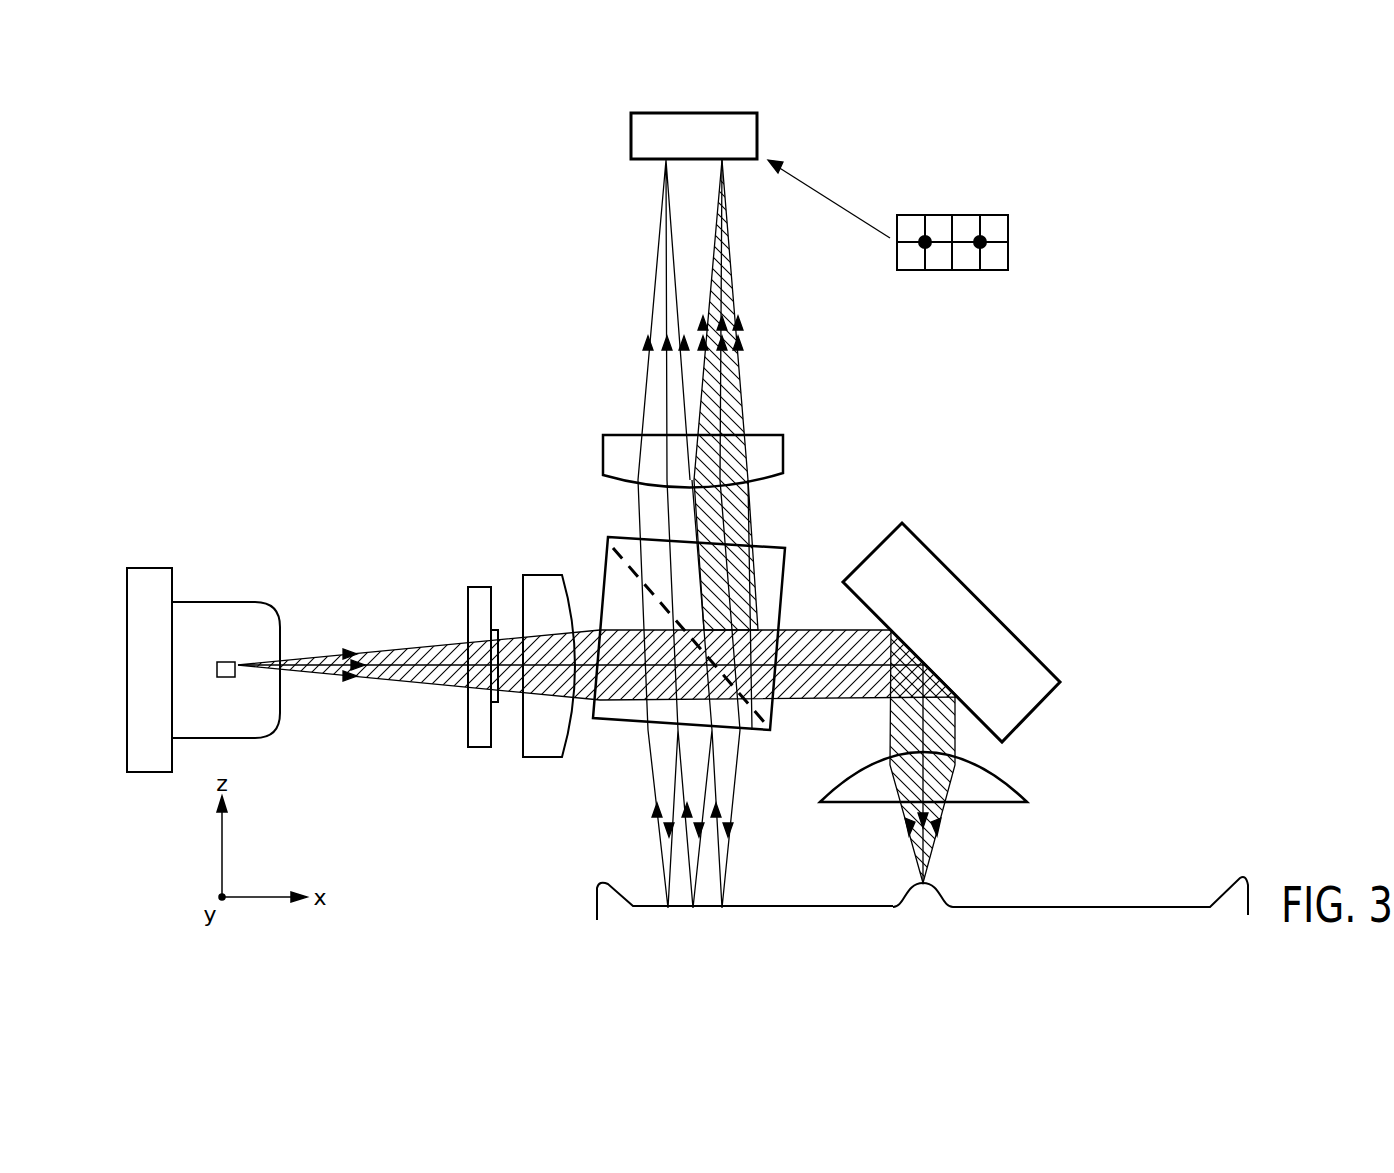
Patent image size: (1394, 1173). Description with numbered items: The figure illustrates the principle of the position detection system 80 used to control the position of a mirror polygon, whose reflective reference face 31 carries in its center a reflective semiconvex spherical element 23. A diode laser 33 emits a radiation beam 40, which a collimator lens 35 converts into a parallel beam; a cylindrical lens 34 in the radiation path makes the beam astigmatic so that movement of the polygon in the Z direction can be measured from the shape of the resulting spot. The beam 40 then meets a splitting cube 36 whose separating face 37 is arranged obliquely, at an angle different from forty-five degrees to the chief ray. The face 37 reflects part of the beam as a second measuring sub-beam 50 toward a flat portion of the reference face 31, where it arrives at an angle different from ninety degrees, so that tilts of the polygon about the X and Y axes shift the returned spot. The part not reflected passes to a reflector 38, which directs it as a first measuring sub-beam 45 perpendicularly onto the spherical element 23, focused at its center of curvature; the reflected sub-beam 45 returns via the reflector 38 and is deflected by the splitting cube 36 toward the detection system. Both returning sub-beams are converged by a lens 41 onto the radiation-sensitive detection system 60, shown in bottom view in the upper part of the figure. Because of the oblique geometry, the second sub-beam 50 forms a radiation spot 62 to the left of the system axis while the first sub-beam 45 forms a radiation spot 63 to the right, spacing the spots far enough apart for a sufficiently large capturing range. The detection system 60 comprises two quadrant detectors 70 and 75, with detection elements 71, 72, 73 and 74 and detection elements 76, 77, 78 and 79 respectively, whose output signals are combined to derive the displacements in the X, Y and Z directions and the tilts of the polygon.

The spherical element 23 is at (906, 897).
The reference face 31 is at (1092, 905).
The diode laser 33 is at (218, 600).
The cylindrical lens 34 is at (470, 768).
The collimator lens 35 is at (535, 785).
The splitting cube 36 is at (616, 722).
The separating face 37 is at (600, 562).
The reflector 38 is at (1000, 620).
The radiation beam 40 is at (382, 650).
The lens 41 is at (810, 443).
The first measuring sub-beam 45 is at (937, 820).
The second measuring sub-beam 50 is at (737, 778).
The radiation-sensitive detection system 60 is at (631, 137).
The radiation spot 62 is at (660, 162).
The radiation spot 63 is at (728, 162).
The quadrant detector 70 is at (885, 146).
The detection element 71 is at (914, 224).
The detection element 72 is at (937, 222).
The detection element 73 is at (937, 264).
The detection element 74 is at (914, 261).
The quadrant detector 75 is at (1005, 146).
The detection element 76 is at (969, 223).
The detection element 77 is at (993, 223).
The detection element 78 is at (993, 261).
The detection element 79 is at (976, 262).
The position detection system 80 is at (1175, 480).